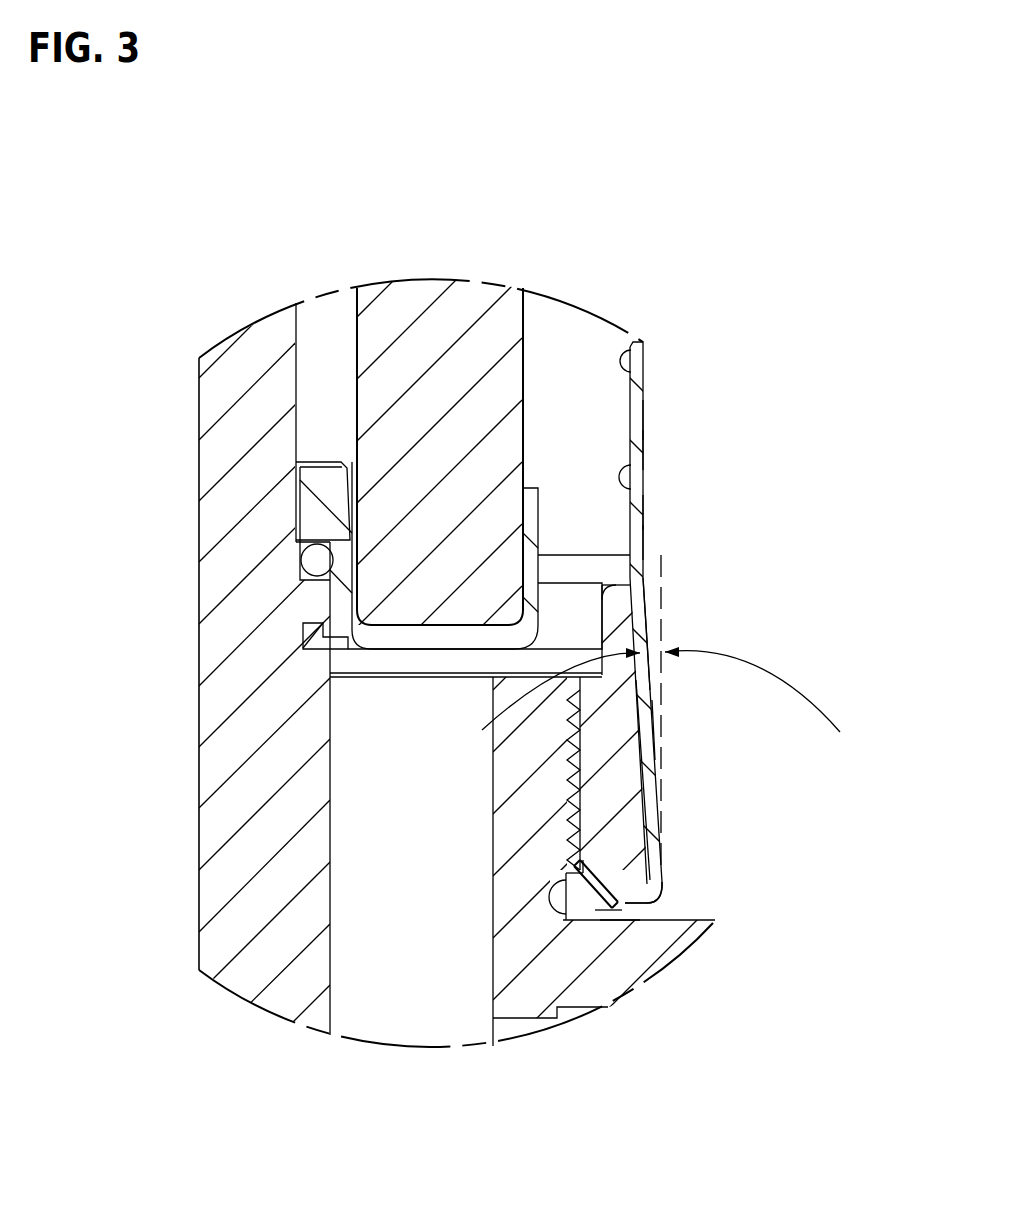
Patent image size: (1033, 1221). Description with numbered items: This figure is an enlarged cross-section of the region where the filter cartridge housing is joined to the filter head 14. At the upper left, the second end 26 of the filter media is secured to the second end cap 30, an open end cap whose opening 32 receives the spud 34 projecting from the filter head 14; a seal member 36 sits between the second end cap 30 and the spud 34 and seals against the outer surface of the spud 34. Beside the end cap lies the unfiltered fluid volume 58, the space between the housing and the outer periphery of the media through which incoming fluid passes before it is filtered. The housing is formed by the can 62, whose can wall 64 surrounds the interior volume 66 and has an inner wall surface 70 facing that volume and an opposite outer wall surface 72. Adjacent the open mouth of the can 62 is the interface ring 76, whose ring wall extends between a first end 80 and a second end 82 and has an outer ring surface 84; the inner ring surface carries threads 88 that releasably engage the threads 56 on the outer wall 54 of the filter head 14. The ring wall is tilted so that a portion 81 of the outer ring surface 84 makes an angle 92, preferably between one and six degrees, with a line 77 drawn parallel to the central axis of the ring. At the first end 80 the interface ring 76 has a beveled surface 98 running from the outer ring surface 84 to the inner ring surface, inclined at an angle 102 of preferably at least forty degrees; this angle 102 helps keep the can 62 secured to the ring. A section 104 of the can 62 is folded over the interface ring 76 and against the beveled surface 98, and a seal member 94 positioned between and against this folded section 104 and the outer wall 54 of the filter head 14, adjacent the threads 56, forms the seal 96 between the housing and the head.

The filter head 14 is at (680, 945).
The second end 26 is at (437, 618).
The second end cap 30 is at (490, 652).
The opening 32 is at (298, 475).
The spud 34 is at (199, 665).
The seal member 36 is at (308, 558).
The outer wall 54 is at (581, 792).
The threads 56 is at (581, 757).
The unfiltered fluid volume 58 is at (607, 358).
The can 62 is at (645, 403).
The can wall 64 is at (645, 421).
The interior volume 66 is at (631, 488).
The inner wall surface 70 is at (644, 376).
The outer wall surface 72 is at (645, 514).
The interface ring 76 is at (627, 637).
The line 77 is at (663, 634).
The first end 80 is at (637, 896).
The portion 81 is at (652, 674).
The second end 82 is at (645, 539).
The outer ring surface 84 is at (657, 748).
The threads 88 is at (568, 771).
The angle 92 is at (783, 681).
The seal member 94 is at (562, 881).
The seal 96 is at (605, 891).
The beveled surface 98 is at (600, 907).
The angle 102 is at (667, 880).
The section 104 is at (623, 903).